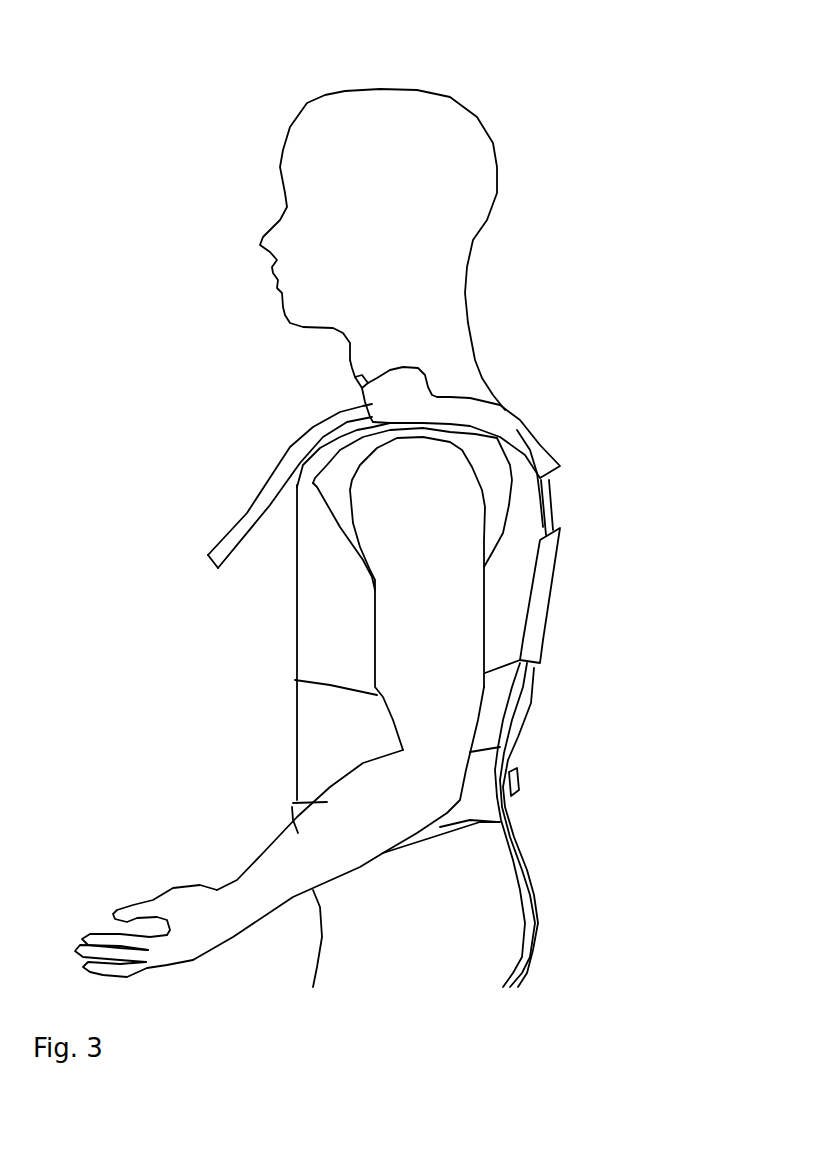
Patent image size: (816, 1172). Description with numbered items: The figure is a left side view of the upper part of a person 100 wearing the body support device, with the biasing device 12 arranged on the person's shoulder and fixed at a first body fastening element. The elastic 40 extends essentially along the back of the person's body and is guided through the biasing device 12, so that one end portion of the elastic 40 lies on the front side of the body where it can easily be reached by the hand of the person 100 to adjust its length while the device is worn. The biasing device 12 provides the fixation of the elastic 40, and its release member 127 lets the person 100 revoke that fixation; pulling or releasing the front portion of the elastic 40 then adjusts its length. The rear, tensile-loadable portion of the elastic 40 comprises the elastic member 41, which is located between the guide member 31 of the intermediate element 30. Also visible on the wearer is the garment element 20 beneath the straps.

The person 100 is at (195, 182).
The biasing device 12 is at (492, 420).
The vest 20 is at (313, 655).
The intermediate element 30 is at (490, 762).
The guide member 31 is at (512, 784).
The elastic 40 is at (263, 483).
The elastic member 41 is at (547, 603).
The release member 127 is at (353, 377).